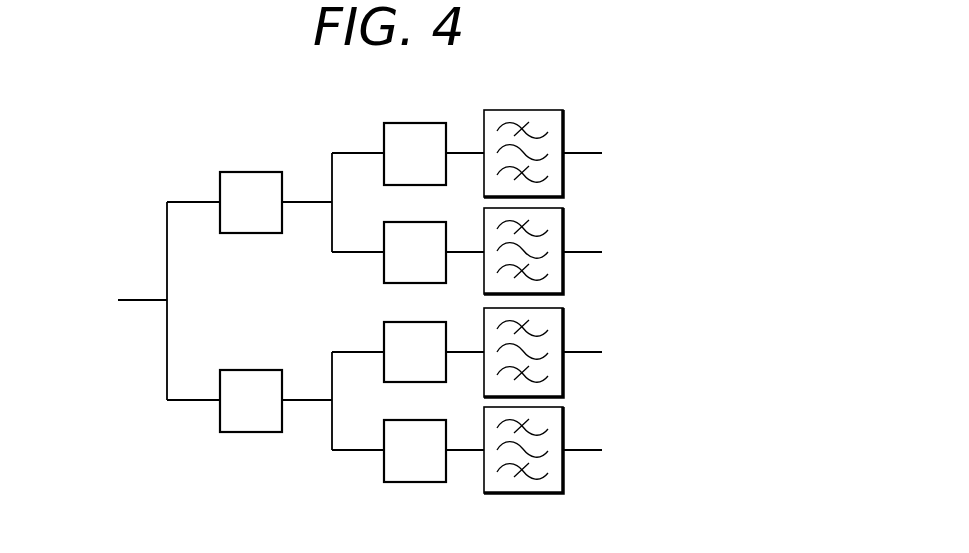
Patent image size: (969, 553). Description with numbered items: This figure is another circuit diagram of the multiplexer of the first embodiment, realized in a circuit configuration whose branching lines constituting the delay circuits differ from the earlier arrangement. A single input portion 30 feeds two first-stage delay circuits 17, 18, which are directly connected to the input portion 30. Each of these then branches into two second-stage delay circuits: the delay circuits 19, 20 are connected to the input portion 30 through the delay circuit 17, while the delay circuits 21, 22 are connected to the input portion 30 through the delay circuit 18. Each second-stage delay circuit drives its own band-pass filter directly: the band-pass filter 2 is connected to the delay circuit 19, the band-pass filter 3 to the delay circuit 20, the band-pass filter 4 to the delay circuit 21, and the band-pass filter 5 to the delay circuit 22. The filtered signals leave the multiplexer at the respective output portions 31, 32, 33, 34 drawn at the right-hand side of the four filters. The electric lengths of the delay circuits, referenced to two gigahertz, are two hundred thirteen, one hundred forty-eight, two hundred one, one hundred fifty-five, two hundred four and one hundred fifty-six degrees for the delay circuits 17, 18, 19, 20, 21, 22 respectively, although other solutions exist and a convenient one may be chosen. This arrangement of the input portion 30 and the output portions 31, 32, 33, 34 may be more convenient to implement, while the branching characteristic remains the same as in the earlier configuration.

The input portion 30 is at (152, 301).
The delay circuit 17 is at (218, 179).
The delay circuit 18 is at (218, 424).
The delay circuit 19 is at (382, 129).
The delay circuit 20 is at (382, 273).
The delay circuit 21 is at (382, 329).
The delay circuit 22 is at (382, 473).
The band-pass filter 2 is at (566, 120).
The band-pass filter 3 is at (566, 219).
The band-pass filter 4 is at (566, 318).
The band-pass filter 5 is at (566, 418).
The output portion 31 is at (599, 154).
The output portion 32 is at (599, 254).
The output portion 33 is at (599, 354).
The output portion 34 is at (599, 454).